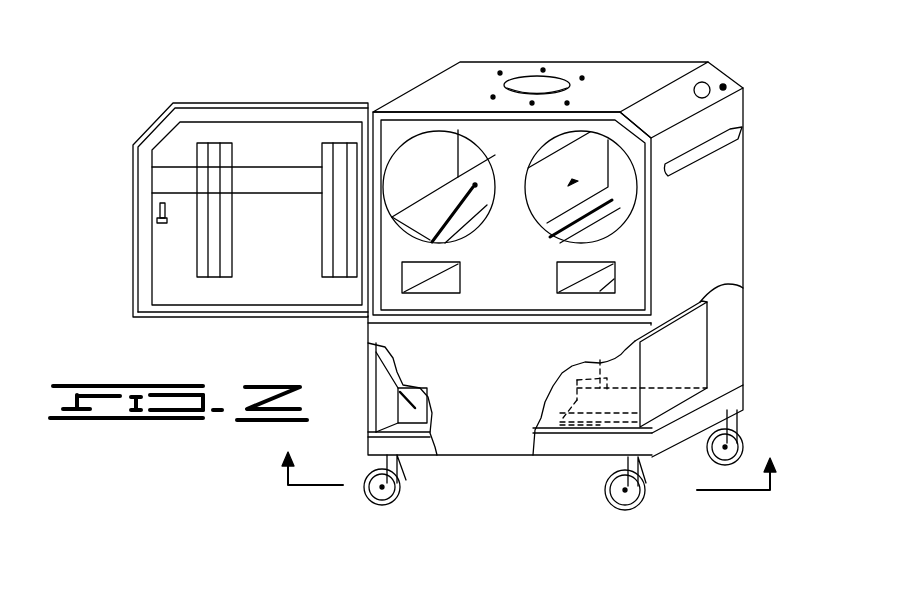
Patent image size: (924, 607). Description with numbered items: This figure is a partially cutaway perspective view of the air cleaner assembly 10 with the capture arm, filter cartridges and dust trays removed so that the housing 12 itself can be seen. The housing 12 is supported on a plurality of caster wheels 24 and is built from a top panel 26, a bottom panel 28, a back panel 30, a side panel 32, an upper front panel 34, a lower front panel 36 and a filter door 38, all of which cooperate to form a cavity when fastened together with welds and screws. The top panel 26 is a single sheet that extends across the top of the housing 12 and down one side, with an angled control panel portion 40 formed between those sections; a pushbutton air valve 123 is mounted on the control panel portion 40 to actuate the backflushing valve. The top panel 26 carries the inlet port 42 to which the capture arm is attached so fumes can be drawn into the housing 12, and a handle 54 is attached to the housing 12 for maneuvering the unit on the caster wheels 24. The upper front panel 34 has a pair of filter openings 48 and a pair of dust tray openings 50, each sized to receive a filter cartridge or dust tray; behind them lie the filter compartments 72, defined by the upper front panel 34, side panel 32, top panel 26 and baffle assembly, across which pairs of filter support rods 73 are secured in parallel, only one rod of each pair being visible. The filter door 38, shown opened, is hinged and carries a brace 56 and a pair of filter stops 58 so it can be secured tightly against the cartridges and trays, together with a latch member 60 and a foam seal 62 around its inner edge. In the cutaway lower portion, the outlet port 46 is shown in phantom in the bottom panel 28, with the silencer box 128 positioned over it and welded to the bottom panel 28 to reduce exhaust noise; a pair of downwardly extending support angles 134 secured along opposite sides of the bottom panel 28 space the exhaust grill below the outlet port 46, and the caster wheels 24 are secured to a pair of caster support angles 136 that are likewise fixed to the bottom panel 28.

The air cleaner assembly 10 is at (697, 29).
The housing 12 is at (416, 81).
The caster wheels 24 is at (748, 440).
The top panel 26 is at (489, 62).
The bottom panel 28 is at (720, 390).
The back panel 30 is at (730, 302).
The side panel 32 is at (385, 366).
The upper front panel 34 is at (498, 300).
The lower front panel 36 is at (465, 442).
The filter door 38 is at (225, 106).
The control panel portion 40 is at (712, 80).
The inlet port 42 is at (545, 80).
The outlet port 46 is at (585, 420).
The filter openings 48 is at (440, 150).
The dust tray openings 50 is at (620, 287).
The handle 54 is at (732, 137).
The brace 56 is at (282, 195).
The filter stops 58 is at (338, 145).
The latch member 60 is at (157, 212).
The foam seal 62 is at (175, 312).
The filter compartments 72 is at (456, 222).
The filter support rods 73 is at (470, 182).
The pushbutton air valve 123 is at (735, 86).
The silencer box 128 is at (677, 392).
The support angles 134 is at (545, 450).
The caster support angles 136 is at (735, 400).